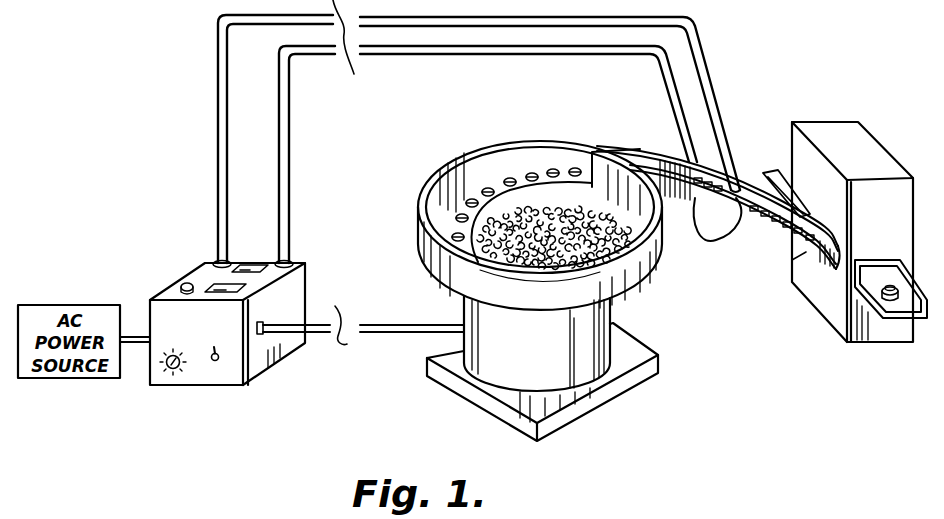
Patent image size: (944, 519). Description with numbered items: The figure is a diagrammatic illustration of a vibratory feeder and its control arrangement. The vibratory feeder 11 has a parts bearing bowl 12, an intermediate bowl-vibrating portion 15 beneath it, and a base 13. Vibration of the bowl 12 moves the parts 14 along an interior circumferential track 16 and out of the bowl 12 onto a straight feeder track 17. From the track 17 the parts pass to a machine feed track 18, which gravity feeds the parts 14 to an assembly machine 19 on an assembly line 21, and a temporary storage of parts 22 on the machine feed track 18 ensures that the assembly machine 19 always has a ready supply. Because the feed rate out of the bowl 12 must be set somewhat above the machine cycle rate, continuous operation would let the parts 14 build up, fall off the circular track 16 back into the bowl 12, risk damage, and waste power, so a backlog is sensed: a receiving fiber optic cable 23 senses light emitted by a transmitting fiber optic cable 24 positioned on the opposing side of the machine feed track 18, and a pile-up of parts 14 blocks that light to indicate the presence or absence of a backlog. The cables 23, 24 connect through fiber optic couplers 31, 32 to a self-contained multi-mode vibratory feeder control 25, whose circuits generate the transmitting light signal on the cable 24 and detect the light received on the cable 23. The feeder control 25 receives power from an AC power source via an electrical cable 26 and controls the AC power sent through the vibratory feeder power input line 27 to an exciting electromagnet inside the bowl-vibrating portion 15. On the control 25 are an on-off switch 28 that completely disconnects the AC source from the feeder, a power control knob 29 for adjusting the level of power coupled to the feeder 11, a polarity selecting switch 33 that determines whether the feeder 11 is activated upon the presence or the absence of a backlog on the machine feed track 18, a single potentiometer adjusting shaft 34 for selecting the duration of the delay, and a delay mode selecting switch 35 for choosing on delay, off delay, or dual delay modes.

The vibratory feeder 11 is at (640, 300).
The parts bearing bowl 12 is at (650, 270).
The base 13 is at (617, 393).
The parts 14 is at (500, 237).
The intermediate bowl-vibrating portion 15 is at (504, 360).
The interior circumferential track 16 is at (517, 167).
The straight feeder track 17 is at (647, 157).
The machine feed track 18 is at (803, 257).
The assembly machine 19 is at (814, 308).
The assembly line 21 is at (895, 323).
The temporary storage of parts 22 is at (793, 209).
The receiving fiber optic cable 23 is at (697, 210).
The transmitting fiber optic cable 24 is at (730, 186).
The vibratory feeder control 25 is at (252, 405).
The electrical cable 26 is at (138, 343).
The vibratory feeder power input line 27 is at (381, 334).
The on-off switch 28 is at (222, 360).
The power control knob 29 is at (176, 370).
The fiber optic coupler 31 is at (292, 262).
The fiber optic coupler 32 is at (216, 261).
The polarity selecting switch 33 is at (246, 268).
The potentiometer adjusting shaft 34 is at (182, 285).
The delay mode selecting switch 35 is at (216, 286).